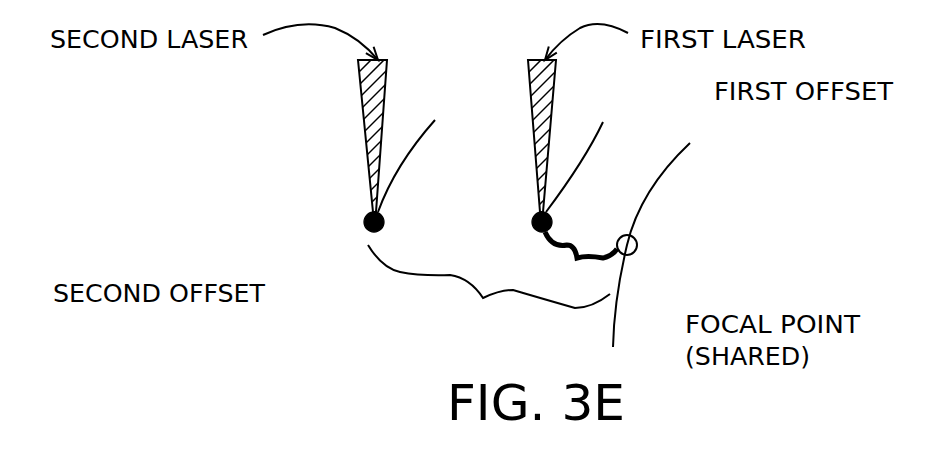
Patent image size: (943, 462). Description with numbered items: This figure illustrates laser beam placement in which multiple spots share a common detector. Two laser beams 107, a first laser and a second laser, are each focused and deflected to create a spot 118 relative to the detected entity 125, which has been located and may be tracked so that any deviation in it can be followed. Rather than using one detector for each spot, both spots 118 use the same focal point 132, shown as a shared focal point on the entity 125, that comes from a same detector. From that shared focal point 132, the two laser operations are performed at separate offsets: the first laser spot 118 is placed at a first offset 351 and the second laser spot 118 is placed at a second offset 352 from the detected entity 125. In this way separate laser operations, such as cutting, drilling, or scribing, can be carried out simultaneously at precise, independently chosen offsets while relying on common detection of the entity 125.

The laser beam 107 is at (362, 72).
The spot 118 is at (367, 223).
The detected entity 125 is at (658, 178).
The focal point 132 is at (632, 253).
The first offset 351 is at (588, 253).
The second offset 352 is at (413, 275).